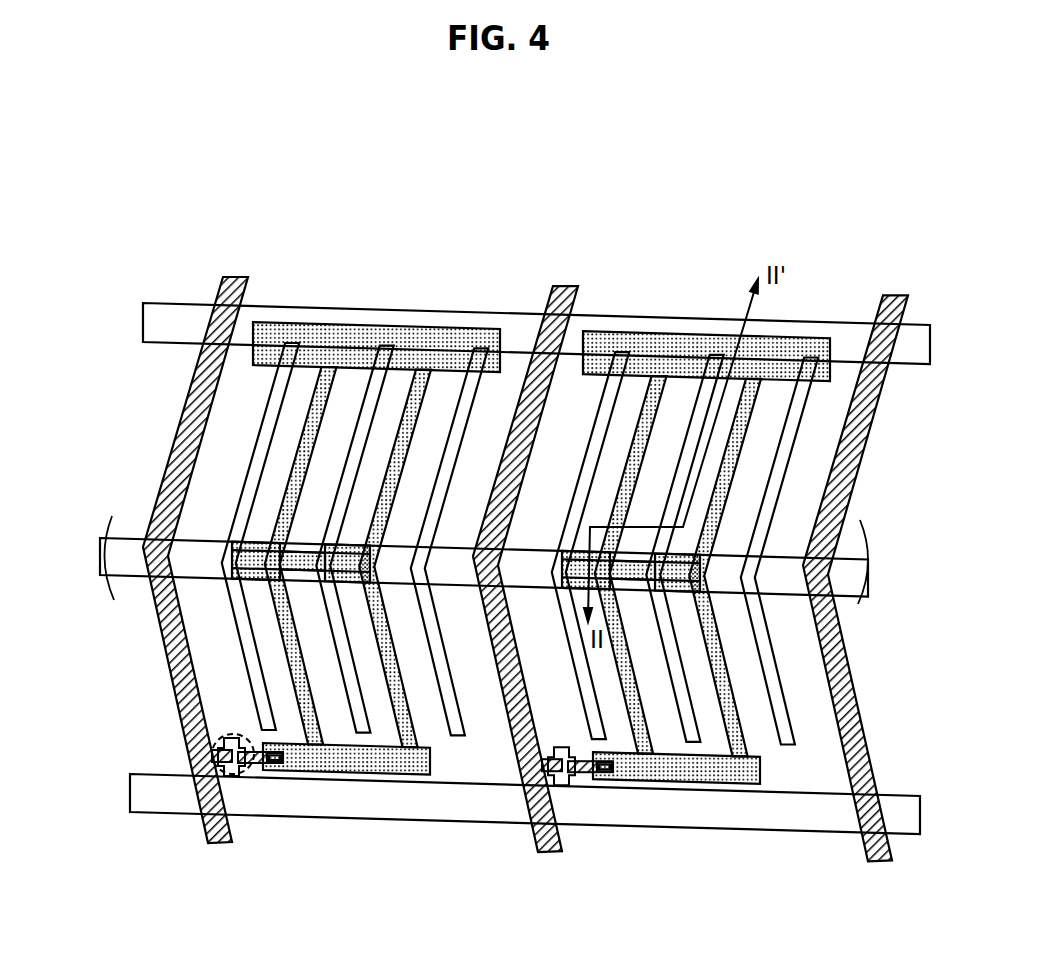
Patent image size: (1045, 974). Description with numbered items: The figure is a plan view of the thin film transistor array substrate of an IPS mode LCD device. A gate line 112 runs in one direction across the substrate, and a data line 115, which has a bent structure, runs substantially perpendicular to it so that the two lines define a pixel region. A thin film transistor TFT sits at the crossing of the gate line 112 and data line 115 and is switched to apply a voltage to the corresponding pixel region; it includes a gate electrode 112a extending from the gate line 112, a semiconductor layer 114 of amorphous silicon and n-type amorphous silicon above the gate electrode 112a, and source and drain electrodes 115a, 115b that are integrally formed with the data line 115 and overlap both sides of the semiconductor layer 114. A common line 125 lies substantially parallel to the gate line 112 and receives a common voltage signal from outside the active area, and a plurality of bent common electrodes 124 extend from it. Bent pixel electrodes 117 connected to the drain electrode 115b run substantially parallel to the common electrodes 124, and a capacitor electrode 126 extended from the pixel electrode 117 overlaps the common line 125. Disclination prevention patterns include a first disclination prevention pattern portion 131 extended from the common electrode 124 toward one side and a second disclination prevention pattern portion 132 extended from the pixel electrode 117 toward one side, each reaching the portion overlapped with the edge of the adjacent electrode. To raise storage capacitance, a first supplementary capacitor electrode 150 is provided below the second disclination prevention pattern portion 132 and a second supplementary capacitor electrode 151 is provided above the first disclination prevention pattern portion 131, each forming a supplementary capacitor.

The gate line 112 is at (427, 810).
The gate electrode 112a is at (238, 742).
The semiconductor layer 114 is at (241, 775).
The data line 115 is at (207, 382).
The source electrode 115a is at (218, 760).
The drain electrode 115b is at (276, 766).
The pixel electrode 117 is at (292, 486).
The common electrode 124 is at (262, 428).
The common line 125 is at (181, 318).
The capacitor electrode 126 is at (428, 336).
The first disclination prevention pattern portion 131 is at (105, 549).
The second disclination prevention pattern portion 132 is at (242, 566).
The first supplementary capacitor electrode 150 is at (264, 575).
The second supplementary capacitor electrode 151 is at (302, 578).
The thin film transistor TFT is at (343, 815).